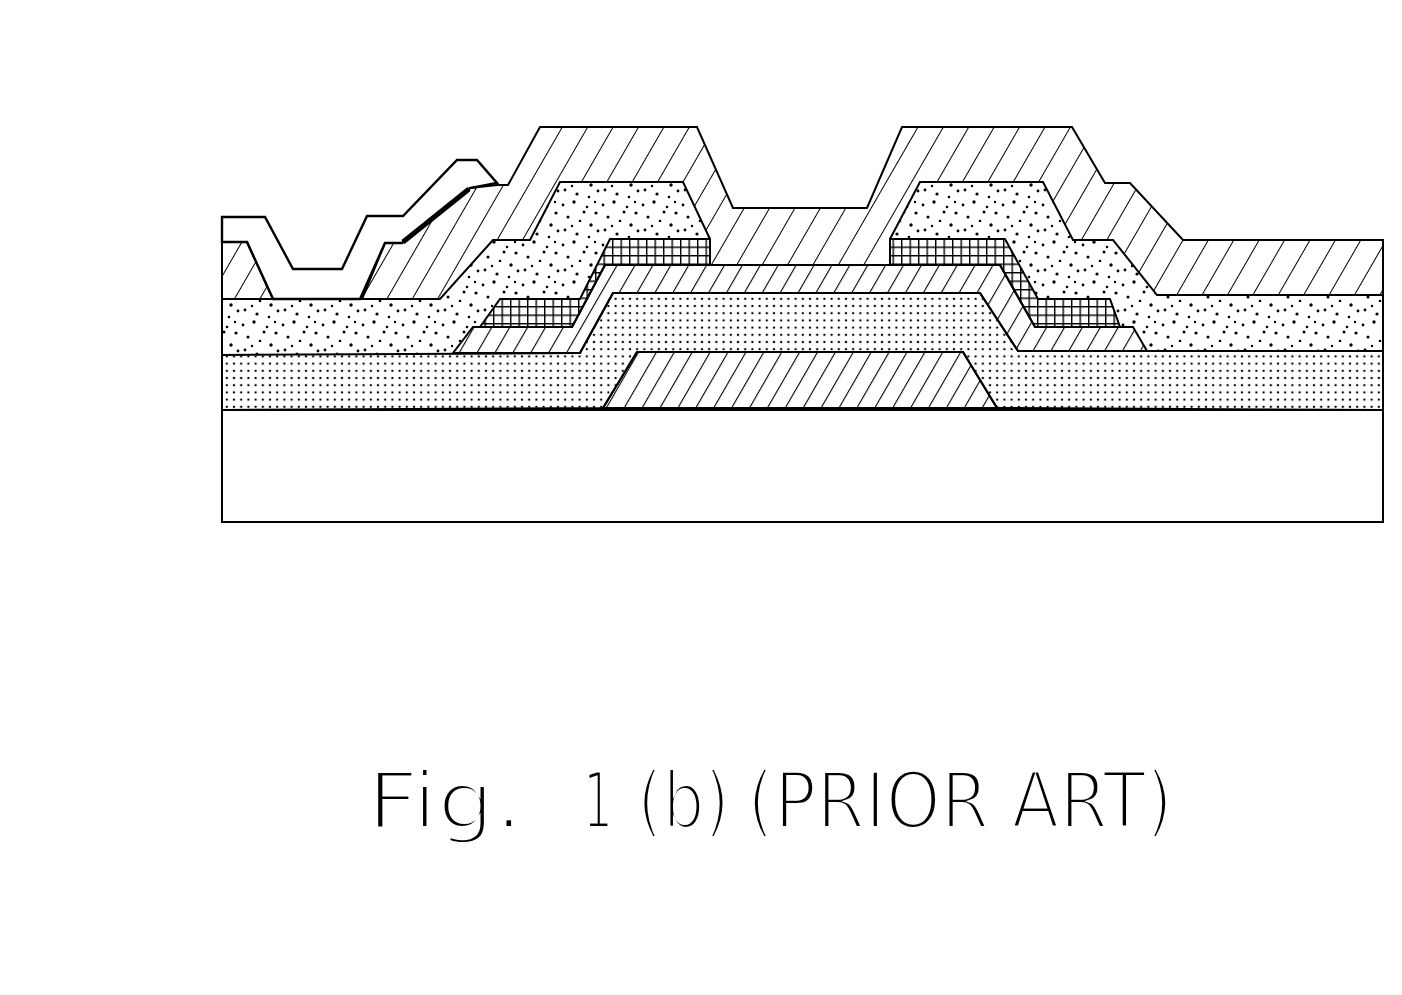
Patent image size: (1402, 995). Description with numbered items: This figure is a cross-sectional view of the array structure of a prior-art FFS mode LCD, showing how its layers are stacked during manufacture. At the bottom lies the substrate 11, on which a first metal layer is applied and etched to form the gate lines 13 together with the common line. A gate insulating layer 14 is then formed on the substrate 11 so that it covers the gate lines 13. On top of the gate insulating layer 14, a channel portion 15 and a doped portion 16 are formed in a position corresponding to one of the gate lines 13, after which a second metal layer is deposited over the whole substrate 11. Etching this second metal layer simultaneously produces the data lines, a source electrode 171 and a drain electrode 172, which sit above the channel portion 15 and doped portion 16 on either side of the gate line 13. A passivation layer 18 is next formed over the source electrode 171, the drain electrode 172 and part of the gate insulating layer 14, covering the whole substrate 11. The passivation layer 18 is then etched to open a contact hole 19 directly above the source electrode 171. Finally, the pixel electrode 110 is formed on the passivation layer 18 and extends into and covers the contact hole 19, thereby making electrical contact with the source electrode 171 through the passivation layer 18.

The substrate 11 is at (237, 498).
The gate line 13 is at (790, 387).
The gate insulating layer 14 is at (243, 382).
The channel portion 15 is at (1090, 305).
The doped portion 16 is at (1117, 247).
The source electrode 171 is at (600, 207).
The drain electrode 172 is at (1000, 215).
The passivation layer 18 is at (953, 150).
The contact hole 19 is at (320, 240).
The pixel electrode 110 is at (252, 230).